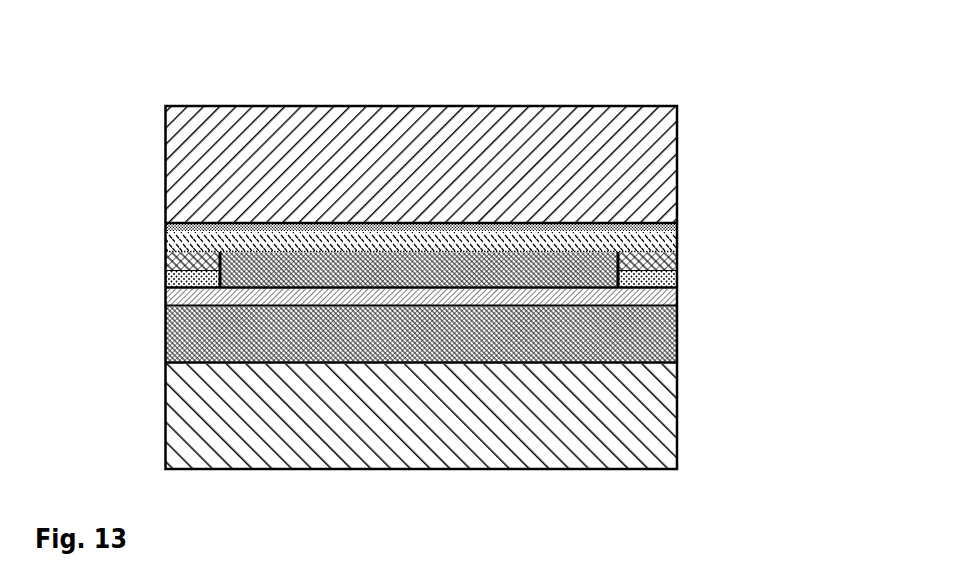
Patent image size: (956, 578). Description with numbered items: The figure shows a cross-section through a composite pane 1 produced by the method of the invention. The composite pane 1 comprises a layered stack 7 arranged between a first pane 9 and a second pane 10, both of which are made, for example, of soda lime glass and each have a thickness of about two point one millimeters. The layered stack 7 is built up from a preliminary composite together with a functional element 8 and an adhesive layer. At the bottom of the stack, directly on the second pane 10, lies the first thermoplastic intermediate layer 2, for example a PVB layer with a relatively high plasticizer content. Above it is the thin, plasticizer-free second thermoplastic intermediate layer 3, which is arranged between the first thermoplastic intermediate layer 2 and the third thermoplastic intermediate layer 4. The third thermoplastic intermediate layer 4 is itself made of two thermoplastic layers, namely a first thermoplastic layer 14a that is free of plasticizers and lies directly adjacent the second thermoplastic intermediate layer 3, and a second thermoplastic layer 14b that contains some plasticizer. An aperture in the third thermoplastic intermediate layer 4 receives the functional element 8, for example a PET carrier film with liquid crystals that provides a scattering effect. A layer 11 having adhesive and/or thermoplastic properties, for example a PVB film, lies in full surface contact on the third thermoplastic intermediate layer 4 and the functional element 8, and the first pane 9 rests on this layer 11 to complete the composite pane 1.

The composite pane 1 is at (122, 63).
The first pane 9 is at (177, 140).
The layer having adhesive and/or thermoplastic properties 11 is at (622, 223).
The functional element 8 is at (245, 277).
The first thermoplastic layer 14a is at (167, 260).
The second thermoplastic layer 14b is at (167, 277).
The third thermoplastic intermediate layer 4 is at (682, 253).
The second thermoplastic intermediate layer 3 is at (163, 300).
The first thermoplastic intermediate layer 2 is at (177, 355).
The second pane 10 is at (177, 422).
The layered stack 7 is at (742, 230).